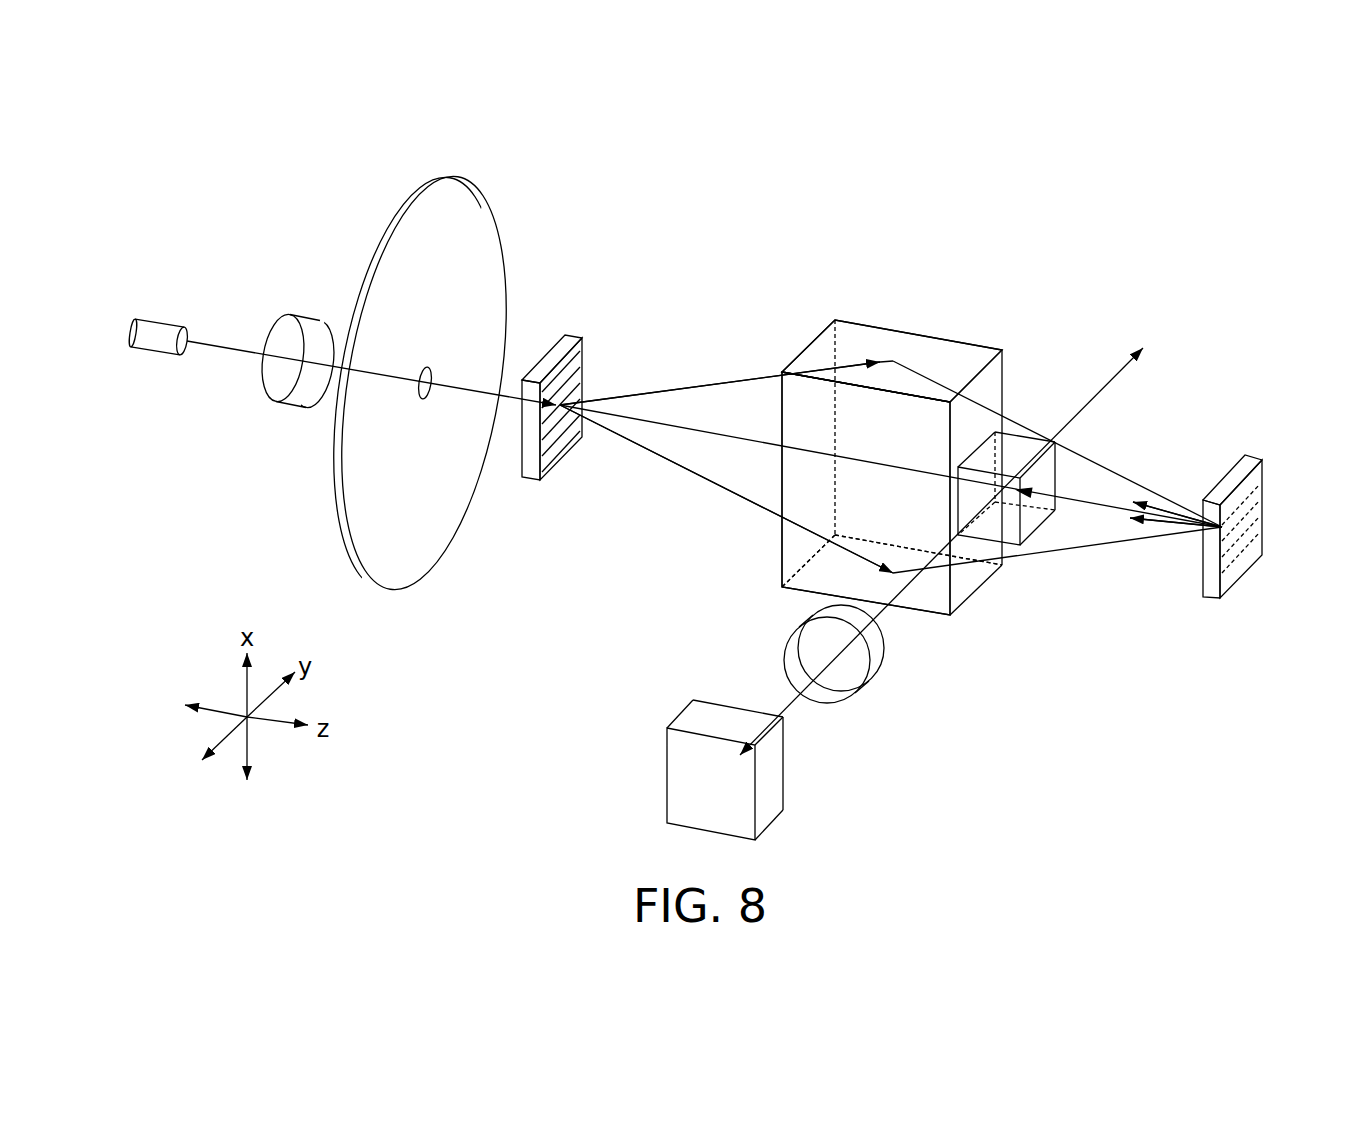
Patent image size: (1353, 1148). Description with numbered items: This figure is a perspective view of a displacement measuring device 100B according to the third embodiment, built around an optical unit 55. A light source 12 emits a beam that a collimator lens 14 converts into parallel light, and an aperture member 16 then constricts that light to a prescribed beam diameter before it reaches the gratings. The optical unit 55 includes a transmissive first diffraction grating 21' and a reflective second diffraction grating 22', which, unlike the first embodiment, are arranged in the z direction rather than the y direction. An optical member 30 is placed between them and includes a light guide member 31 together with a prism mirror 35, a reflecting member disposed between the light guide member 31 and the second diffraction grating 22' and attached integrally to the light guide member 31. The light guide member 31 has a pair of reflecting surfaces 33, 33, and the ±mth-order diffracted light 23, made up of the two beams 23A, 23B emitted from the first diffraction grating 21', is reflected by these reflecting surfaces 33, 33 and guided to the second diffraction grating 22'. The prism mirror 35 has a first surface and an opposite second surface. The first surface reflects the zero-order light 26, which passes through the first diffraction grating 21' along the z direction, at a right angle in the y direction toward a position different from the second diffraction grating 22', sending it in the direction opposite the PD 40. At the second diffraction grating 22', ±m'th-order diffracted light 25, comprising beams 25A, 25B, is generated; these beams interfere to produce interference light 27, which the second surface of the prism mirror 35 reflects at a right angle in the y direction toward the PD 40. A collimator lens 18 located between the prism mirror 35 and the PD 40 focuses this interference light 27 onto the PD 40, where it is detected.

The displacement measuring device 100B is at (300, 185).
The light source 12 is at (155, 360).
The collimator lens 14 is at (285, 396).
The aperture member 16 is at (465, 195).
The first diffraction grating 21' is at (565, 368).
The ±mth-order diffracted light 23 is at (763, 302).
The diffracted light 23A is at (675, 463).
The diffracted light 23B is at (738, 383).
The zero-order light 26 is at (735, 440).
The interference light 27 is at (1110, 508).
The ±m'th-order diffracted light 25 is at (1243, 417).
The diffracted light 25A is at (1180, 522).
The diffracted light 25B is at (1157, 503).
The second diffraction grating 22' is at (1250, 485).
The optical member 30 is at (977, 328).
The light guide member 31 is at (868, 343).
The reflecting surface 33 is at (925, 348).
The prism mirror 35 is at (1015, 438).
The optical unit 55 is at (1030, 620).
The collimator lens 18 is at (877, 658).
The PD 40 is at (770, 793).